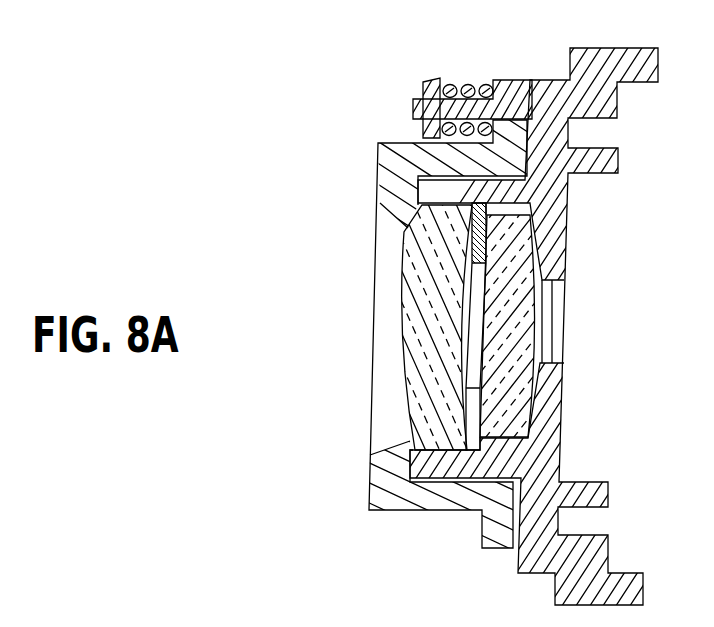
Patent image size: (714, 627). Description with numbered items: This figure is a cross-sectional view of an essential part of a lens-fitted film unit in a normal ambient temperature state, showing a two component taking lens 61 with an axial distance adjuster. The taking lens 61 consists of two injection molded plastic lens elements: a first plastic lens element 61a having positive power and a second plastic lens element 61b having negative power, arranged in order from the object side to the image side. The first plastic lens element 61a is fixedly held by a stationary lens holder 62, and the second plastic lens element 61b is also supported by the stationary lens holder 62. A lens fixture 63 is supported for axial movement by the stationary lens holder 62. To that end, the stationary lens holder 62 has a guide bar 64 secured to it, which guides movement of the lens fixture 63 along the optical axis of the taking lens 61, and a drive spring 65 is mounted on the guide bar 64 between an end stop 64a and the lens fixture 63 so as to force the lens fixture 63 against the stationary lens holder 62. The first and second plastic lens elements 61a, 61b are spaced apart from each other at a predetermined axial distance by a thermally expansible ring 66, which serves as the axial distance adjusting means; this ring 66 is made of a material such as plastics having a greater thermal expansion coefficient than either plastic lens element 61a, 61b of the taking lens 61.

The taking lens 61 is at (439, 327).
The first plastic lens element 61a is at (415, 513).
The second plastic lens element 61b is at (369, 559).
The stationary lens holder 62 is at (545, 79).
The lens fixture 63 is at (378, 185).
The guide bar 64 is at (346, 325).
The end stop 64a is at (427, 84).
The drive spring 65 is at (465, 73).
The thermally expansible ring 66 is at (500, 206).